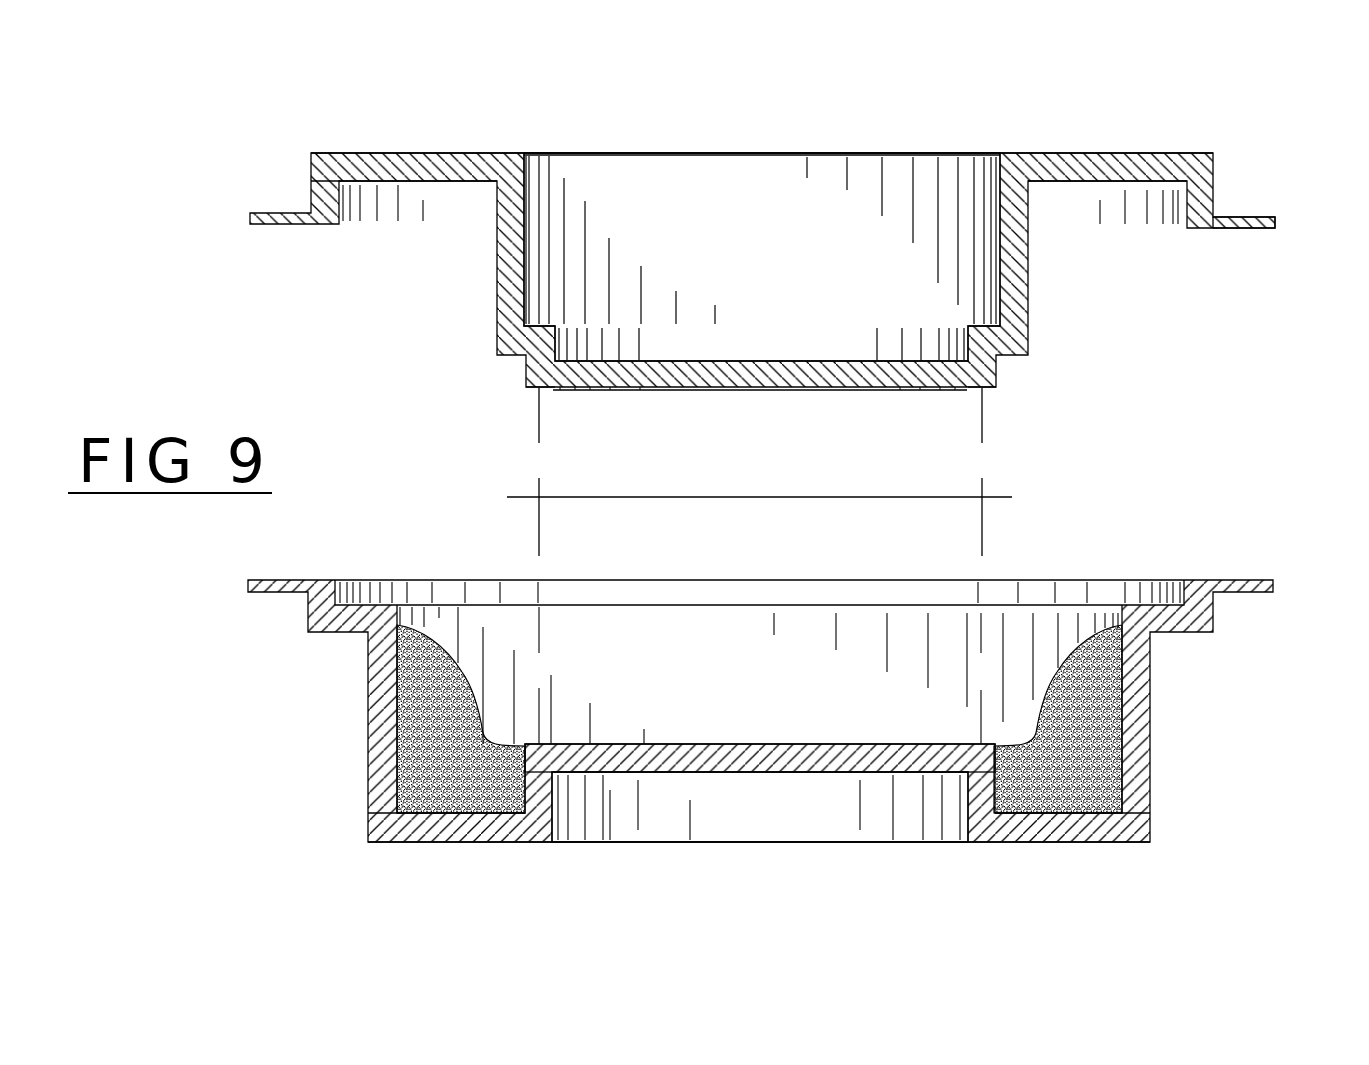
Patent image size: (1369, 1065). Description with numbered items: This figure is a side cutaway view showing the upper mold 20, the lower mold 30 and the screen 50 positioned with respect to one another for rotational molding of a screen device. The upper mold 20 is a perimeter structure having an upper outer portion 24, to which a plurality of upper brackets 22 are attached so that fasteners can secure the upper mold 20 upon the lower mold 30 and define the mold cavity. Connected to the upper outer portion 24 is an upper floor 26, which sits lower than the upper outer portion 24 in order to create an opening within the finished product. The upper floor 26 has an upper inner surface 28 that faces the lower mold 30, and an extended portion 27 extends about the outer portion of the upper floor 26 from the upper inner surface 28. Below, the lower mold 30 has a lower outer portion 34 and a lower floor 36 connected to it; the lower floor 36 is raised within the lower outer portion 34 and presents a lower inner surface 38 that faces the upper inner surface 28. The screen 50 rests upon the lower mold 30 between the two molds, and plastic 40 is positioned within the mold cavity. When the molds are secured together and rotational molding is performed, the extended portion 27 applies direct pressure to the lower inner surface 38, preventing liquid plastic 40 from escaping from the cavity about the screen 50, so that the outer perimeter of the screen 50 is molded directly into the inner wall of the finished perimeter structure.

The upper mold 20 is at (470, 268).
The upper brackets 22 is at (1237, 228).
The upper outer portion 24 is at (360, 153).
The upper floor 26 is at (770, 362).
The extended portion 27 is at (540, 388).
The upper inner surface 28 is at (767, 388).
The screen 50 is at (967, 497).
The lower mold 30 is at (1236, 572).
The lower inner surface 38 is at (727, 744).
The plastic 40 is at (412, 713).
The lower outer portion 34 is at (430, 832).
The lower floor 36 is at (775, 762).